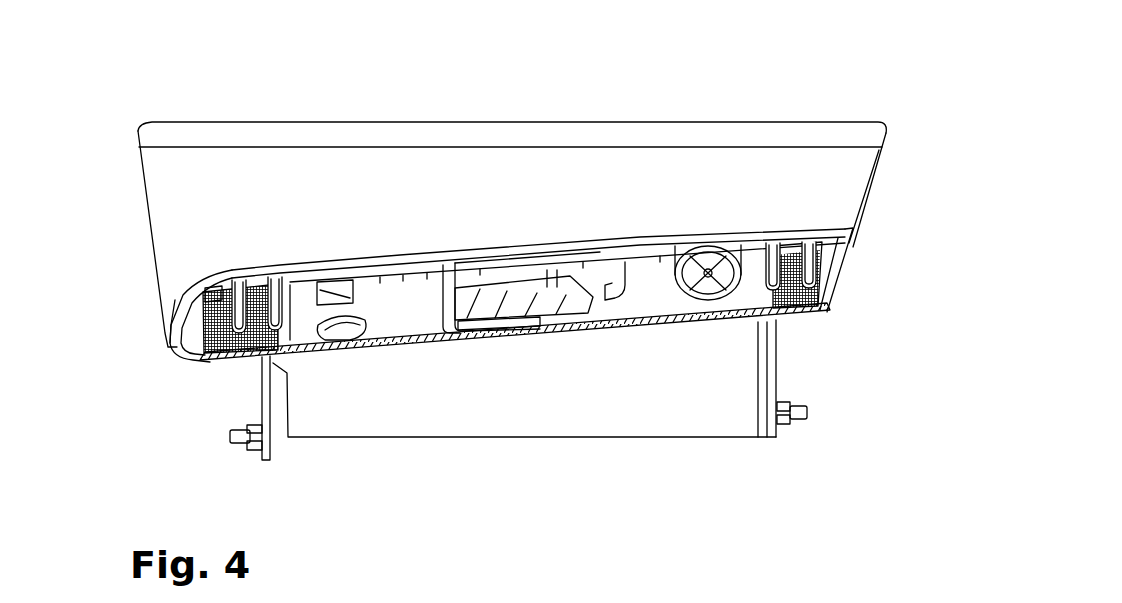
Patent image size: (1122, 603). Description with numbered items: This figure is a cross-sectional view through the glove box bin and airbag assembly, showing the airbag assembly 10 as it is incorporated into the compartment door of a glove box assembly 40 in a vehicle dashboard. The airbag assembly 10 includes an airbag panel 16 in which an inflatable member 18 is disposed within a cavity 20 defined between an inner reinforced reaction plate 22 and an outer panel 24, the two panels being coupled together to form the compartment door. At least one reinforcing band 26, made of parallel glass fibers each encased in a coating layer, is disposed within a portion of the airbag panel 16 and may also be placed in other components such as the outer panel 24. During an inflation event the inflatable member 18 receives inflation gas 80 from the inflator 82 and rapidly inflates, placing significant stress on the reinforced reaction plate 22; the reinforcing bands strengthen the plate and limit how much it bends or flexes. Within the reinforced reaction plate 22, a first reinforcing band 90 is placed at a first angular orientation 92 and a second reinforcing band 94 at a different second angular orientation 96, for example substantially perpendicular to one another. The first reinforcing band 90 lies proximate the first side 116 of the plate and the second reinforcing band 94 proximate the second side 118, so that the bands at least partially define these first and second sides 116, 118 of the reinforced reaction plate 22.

The airbag assembly 10 is at (143, 287).
The airbag panel 16 is at (671, 105).
The inflatable member 18 is at (253, 280).
The cavity 20 is at (394, 350).
The reinforced reaction plate 22 is at (713, 305).
The outer panel 24 is at (784, 132).
The reinforcing band 26 is at (827, 307).
The glove box assembly 40 is at (276, 108).
The inflation gas 80 is at (490, 335).
The inflator 82 is at (563, 308).
The first reinforcing band 90 is at (437, 347).
The first angular orientation 92 is at (549, 350).
The second reinforcing band 94 is at (193, 347).
The second angular orientation 96 is at (190, 323).
The first side 116 is at (318, 357).
The second side 118 is at (306, 295).